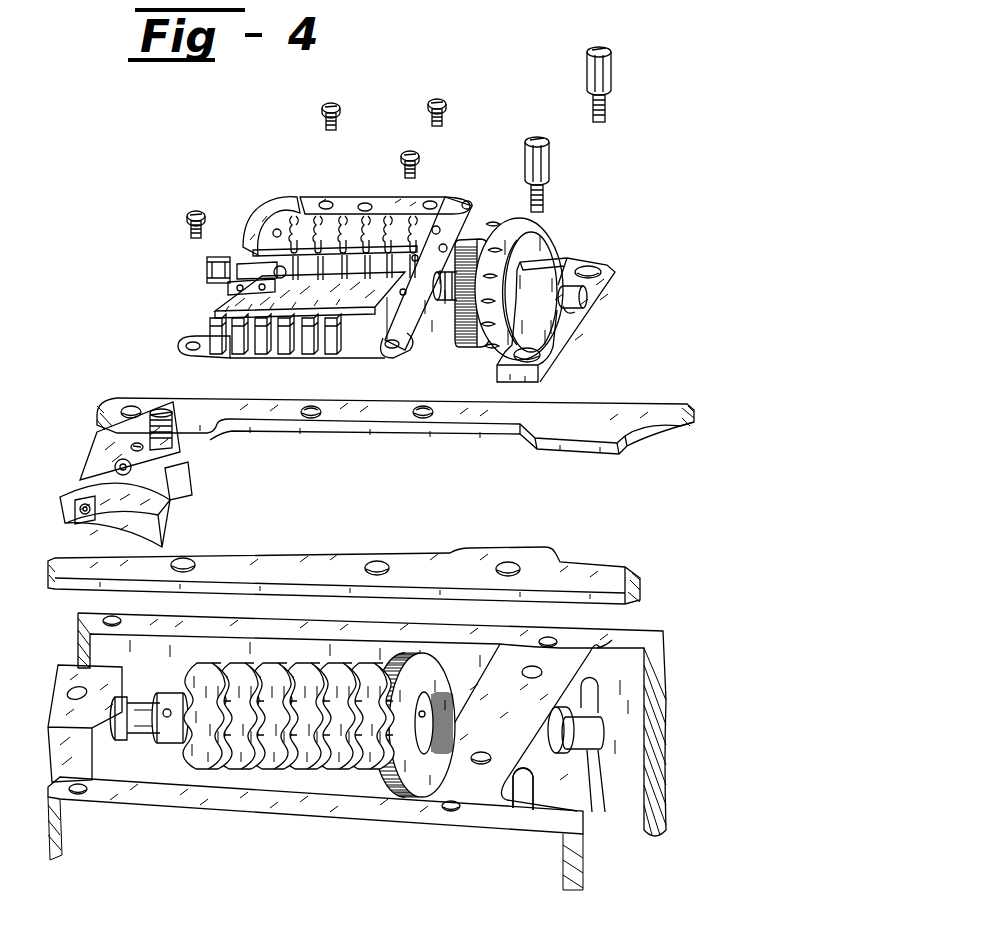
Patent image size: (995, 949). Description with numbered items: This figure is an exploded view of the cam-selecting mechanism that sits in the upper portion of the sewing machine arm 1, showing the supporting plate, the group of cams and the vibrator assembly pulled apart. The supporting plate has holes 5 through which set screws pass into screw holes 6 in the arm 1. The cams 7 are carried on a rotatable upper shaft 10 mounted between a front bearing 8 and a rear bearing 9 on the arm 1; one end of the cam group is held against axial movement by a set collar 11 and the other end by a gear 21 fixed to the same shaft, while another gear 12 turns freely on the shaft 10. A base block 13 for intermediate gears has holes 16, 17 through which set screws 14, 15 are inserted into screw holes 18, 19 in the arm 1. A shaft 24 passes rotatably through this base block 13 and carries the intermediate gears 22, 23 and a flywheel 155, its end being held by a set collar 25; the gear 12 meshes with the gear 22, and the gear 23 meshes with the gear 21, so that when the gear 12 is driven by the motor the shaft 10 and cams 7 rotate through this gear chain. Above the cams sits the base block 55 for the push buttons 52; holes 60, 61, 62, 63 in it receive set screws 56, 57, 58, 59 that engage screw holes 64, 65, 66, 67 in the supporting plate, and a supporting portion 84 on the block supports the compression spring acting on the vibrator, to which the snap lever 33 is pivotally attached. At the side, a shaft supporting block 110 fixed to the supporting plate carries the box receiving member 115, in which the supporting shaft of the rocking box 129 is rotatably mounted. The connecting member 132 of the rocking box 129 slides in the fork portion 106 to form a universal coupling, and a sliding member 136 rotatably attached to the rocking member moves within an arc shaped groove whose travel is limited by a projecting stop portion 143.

The arm 1 is at (655, 735).
The holes 5 is at (135, 406).
The screw holes 6 is at (120, 617).
The cams 7 is at (240, 768).
The front bearing 8 is at (58, 670).
The rear bearing 9 is at (556, 800).
The upper shaft 10 is at (142, 737).
The set collar 11 is at (172, 743).
The gear 12 is at (452, 700).
The base block for intermediate gears 13 is at (583, 318).
The set screw 14 is at (550, 165).
The set screw 15 is at (612, 73).
The hole 16 is at (540, 358).
The hole 17 is at (615, 276).
The screw hole 18 is at (481, 764).
The screw hole 19 is at (542, 672).
The gear 21 is at (385, 770).
The intermediate gear 22 is at (470, 348).
The intermediate gear 23 is at (440, 300).
The shaft 24 is at (587, 303).
The set collar 25 is at (395, 345).
The snap lever 33 is at (300, 197).
The push buttons 52 is at (232, 358).
The base block for the push buttons 55 is at (365, 325).
The set screw 56 is at (205, 213).
The set screw 57 is at (340, 105).
The set screw 58 is at (446, 102).
The set screw 59 is at (419, 154).
The hole 60 is at (176, 345).
The hole 61 is at (328, 201).
The hole 62 is at (434, 201).
The hole 63 is at (410, 352).
The screw hole 64 is at (220, 556).
The screw hole 65 is at (311, 418).
The screw hole 66 is at (420, 418).
The screw hole 67 is at (387, 568).
The supporting portion 84 is at (366, 203).
The fork portion 106 is at (205, 272).
The shaft supporting block 110 is at (178, 453).
The box receiving member 115 is at (100, 462).
The rocking box 129 is at (160, 516).
The connecting member 132 is at (190, 480).
The sliding member 136 is at (80, 520).
The projecting stop portion 143 is at (165, 560).
The flywheel 155 is at (533, 250).